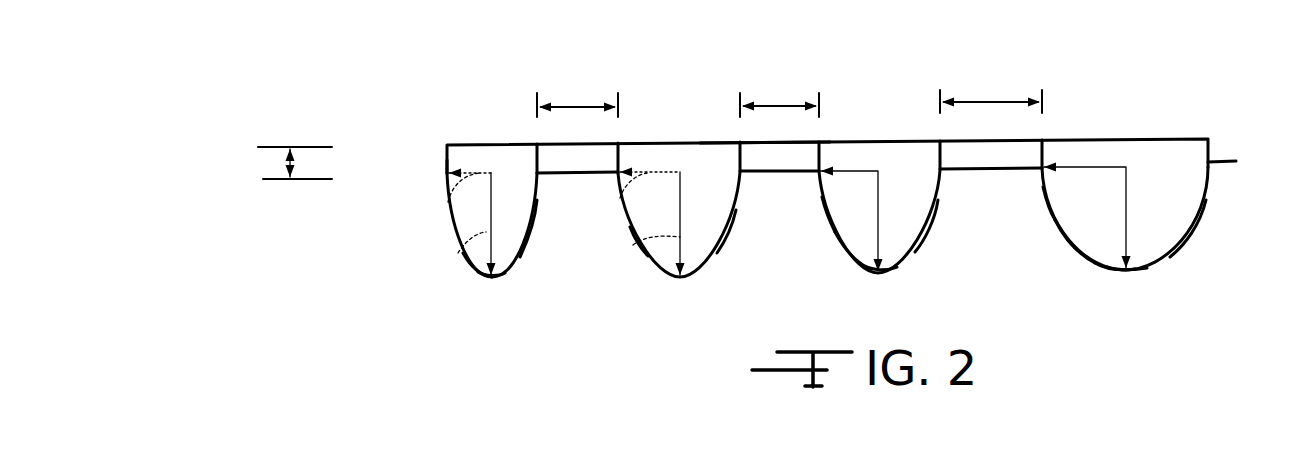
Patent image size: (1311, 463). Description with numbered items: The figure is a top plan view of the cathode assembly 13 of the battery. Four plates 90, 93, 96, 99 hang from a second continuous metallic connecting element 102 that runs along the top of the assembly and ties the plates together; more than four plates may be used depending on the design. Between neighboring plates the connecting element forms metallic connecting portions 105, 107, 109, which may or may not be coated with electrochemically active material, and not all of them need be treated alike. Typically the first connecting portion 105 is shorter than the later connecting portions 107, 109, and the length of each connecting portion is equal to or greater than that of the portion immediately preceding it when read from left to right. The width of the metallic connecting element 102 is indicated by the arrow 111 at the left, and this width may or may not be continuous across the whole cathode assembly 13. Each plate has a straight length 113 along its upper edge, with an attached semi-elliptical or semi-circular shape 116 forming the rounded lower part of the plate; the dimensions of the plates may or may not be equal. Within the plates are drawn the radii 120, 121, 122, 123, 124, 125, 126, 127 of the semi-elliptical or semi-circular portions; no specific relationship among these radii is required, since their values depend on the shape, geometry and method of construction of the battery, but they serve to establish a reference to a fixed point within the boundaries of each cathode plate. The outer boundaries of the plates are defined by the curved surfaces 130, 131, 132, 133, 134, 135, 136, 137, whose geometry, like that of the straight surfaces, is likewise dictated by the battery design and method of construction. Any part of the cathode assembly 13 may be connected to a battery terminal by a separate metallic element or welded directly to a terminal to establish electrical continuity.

The cathode assembly 13 is at (430, 77).
The plate 90 is at (483, 152).
The plate 93 is at (677, 155).
The plate 96 is at (873, 153).
The plate 99 is at (1125, 150).
The second continuous metallic connecting element 102 is at (765, 153).
The metallic connecting portion 105 is at (565, 156).
The metallic connecting portion 107 is at (797, 155).
The metallic connecting portion 109 is at (1007, 157).
The width of the metallic connecting element 111 is at (280, 160).
The straight length 113 is at (1236, 161).
The semi-elliptical or semi-circular shape 116 is at (488, 293).
The radius 120 is at (450, 207).
The radius 121 is at (460, 257).
The radius 122 is at (625, 200).
The radius 123 is at (657, 272).
The radius 124 is at (850, 174).
The radius 125 is at (875, 230).
The radius 126 is at (1077, 170).
The radius 127 is at (1123, 232).
The curved surface 130 is at (455, 240).
The curved surface 131 is at (520, 252).
The curved surface 132 is at (632, 248).
The curved surface 133 is at (720, 250).
The curved surface 134 is at (832, 240).
The curved surface 135 is at (927, 238).
The curved surface 136 is at (1063, 237).
The curved surface 137 is at (1193, 230).